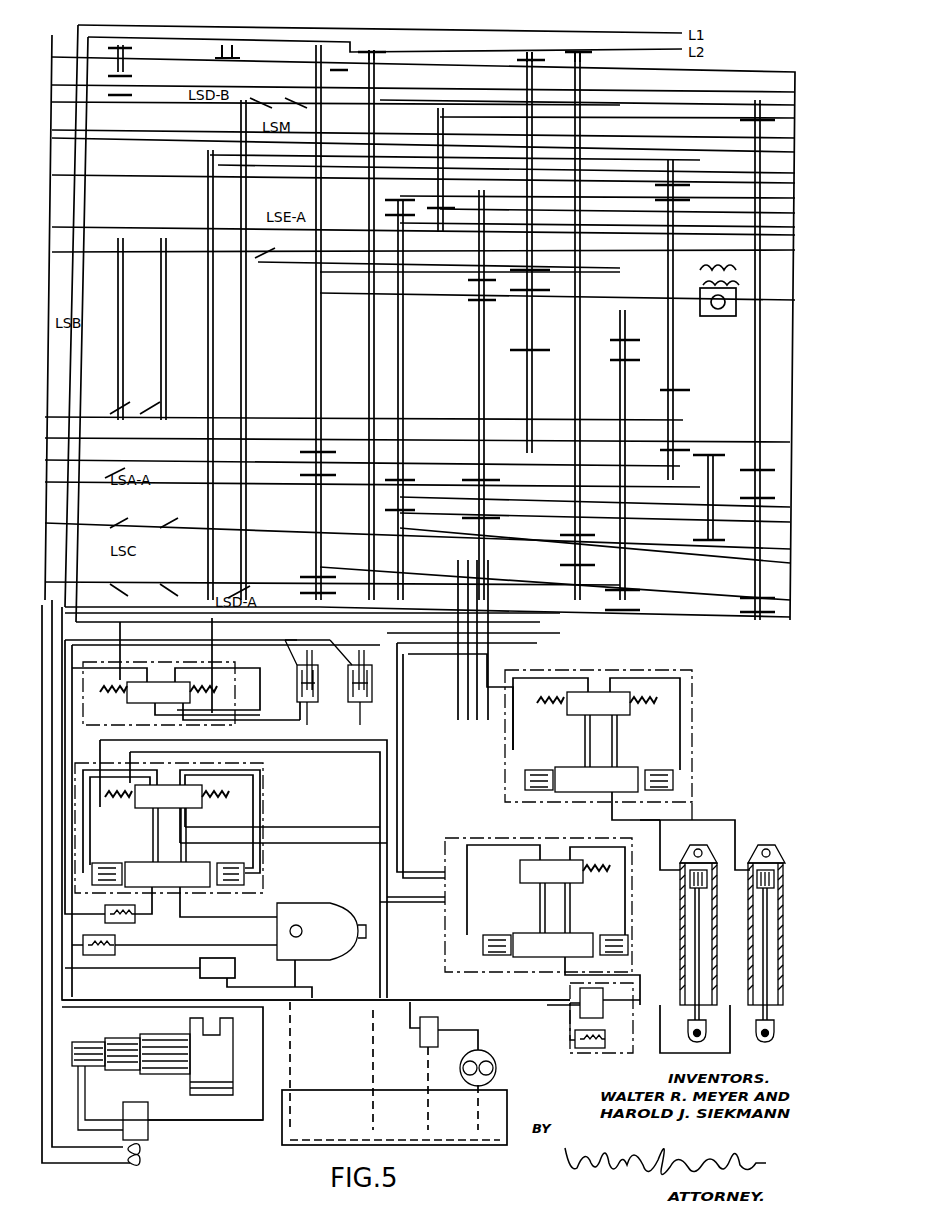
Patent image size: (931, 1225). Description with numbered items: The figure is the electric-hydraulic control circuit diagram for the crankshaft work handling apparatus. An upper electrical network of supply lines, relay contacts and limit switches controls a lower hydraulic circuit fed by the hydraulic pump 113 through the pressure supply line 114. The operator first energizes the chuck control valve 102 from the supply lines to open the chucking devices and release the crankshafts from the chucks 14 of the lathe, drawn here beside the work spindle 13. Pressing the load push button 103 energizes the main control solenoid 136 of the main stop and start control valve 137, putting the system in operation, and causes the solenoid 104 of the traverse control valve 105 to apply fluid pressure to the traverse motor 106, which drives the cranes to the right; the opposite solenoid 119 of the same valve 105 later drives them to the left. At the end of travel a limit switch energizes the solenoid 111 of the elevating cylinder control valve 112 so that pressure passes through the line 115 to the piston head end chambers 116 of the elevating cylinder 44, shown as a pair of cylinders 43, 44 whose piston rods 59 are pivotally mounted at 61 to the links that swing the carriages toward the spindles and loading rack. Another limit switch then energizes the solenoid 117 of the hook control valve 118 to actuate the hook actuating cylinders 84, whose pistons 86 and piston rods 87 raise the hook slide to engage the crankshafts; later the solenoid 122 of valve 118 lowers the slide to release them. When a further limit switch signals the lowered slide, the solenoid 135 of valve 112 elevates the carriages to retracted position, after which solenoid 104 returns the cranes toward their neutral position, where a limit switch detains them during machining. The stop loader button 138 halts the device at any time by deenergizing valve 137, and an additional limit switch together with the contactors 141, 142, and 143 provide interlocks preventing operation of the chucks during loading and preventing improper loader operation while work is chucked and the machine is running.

The spindle 13 is at (158, 1038).
The chuck 14 is at (228, 1070).
The hydraulic cylinder 43 is at (764, 847).
The elevating cylinder 44 is at (748, 935).
The piston rod 59 is at (763, 958).
The pivotal mounting 61 is at (770, 1040).
The hook actuating cylinder 84 is at (318, 698).
The piston 86 is at (319, 672).
The piston rod 87 is at (330, 640).
The chuck control valve 102 is at (148, 1133).
The load push button 103 is at (124, 66).
The solenoid 104 is at (118, 806).
The traverse control valve 105 is at (265, 876).
The traverse motor 106 is at (321, 931).
The solenoid 111 is at (650, 715).
The elevating cylinder control valve 112 is at (692, 757).
The hydraulic pump 113 is at (496, 1070).
The pressure supply line 114 is at (295, 640).
The line 115 is at (700, 815).
The piston head end chamber 116 is at (757, 888).
The solenoid 117 is at (114, 700).
The hook control valve 118 is at (145, 663).
The solenoid 119 is at (235, 796).
The solenoid 122 is at (214, 705).
The solenoid 135 is at (556, 712).
The main control solenoid 136 is at (602, 880).
The main stop and start control valve 137 is at (628, 975).
The stop loader button 138 is at (222, 50).
The contactor 141 is at (382, 48).
The contactor 142 is at (520, 50).
The contactor 143 is at (590, 53).